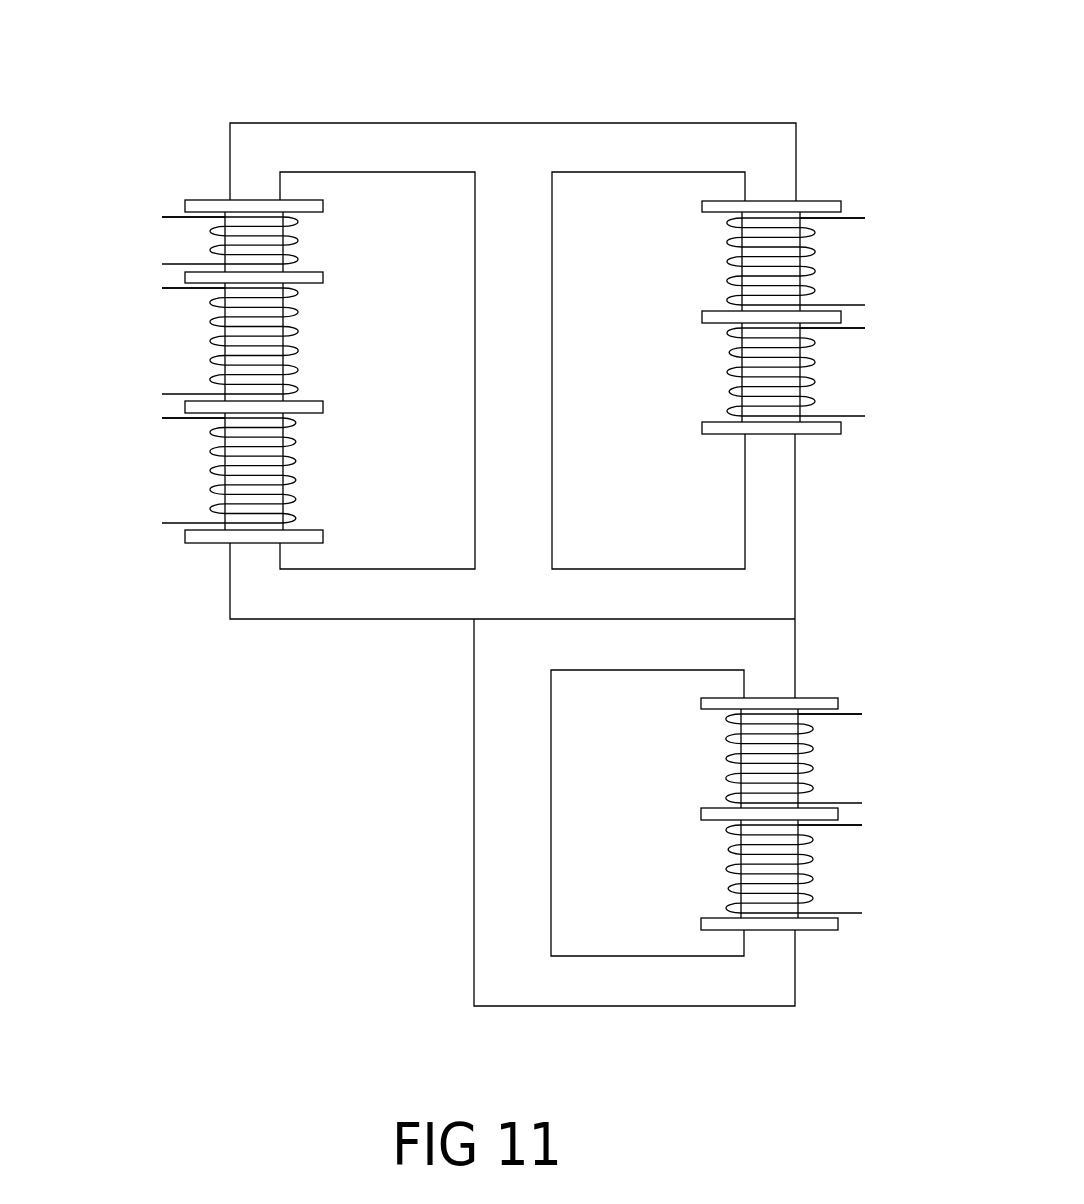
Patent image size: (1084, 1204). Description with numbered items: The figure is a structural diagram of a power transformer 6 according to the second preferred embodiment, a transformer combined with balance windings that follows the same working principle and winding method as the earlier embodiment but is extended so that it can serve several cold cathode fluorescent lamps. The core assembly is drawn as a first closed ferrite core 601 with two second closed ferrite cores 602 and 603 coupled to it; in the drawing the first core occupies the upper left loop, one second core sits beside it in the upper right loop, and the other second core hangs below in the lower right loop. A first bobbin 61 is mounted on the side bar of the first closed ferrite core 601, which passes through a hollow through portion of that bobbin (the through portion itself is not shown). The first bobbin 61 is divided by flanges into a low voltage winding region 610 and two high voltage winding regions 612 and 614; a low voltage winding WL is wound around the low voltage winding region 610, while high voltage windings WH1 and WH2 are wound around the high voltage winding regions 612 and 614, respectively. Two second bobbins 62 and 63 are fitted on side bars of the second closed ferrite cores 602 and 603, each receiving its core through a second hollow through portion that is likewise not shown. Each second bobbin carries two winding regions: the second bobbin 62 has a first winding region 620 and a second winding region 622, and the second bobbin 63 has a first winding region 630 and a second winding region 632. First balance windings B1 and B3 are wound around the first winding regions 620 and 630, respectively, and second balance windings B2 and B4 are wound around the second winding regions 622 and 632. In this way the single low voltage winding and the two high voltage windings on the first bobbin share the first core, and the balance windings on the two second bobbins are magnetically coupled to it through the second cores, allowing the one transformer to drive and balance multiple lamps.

The power transformer 6 is at (901, 51).
The first closed ferrite core 601 is at (309, 167).
The second closed ferrite core 602 is at (714, 167).
The second closed ferrite core 603 is at (771, 692).
The first bobbin 61 is at (224, 194).
The second bobbin 62 is at (806, 199).
The second bobbin 63 is at (839, 703).
The low voltage winding region 610 is at (217, 240).
The high voltage winding region 612 is at (217, 330).
The high voltage winding region 614 is at (217, 463).
The first winding region 620 is at (809, 242).
The second winding region 622 is at (809, 353).
The first winding region 630 is at (801, 795).
The second winding region 632 is at (801, 905).
The low voltage winding WL is at (161, 209).
The high voltage winding WH1 is at (164, 283).
The high voltage winding WH2 is at (164, 410).
The first balance winding B1 is at (853, 218).
The second balance winding B2 is at (853, 328).
The first balance winding B3 is at (835, 715).
The second balance winding B4 is at (835, 826).